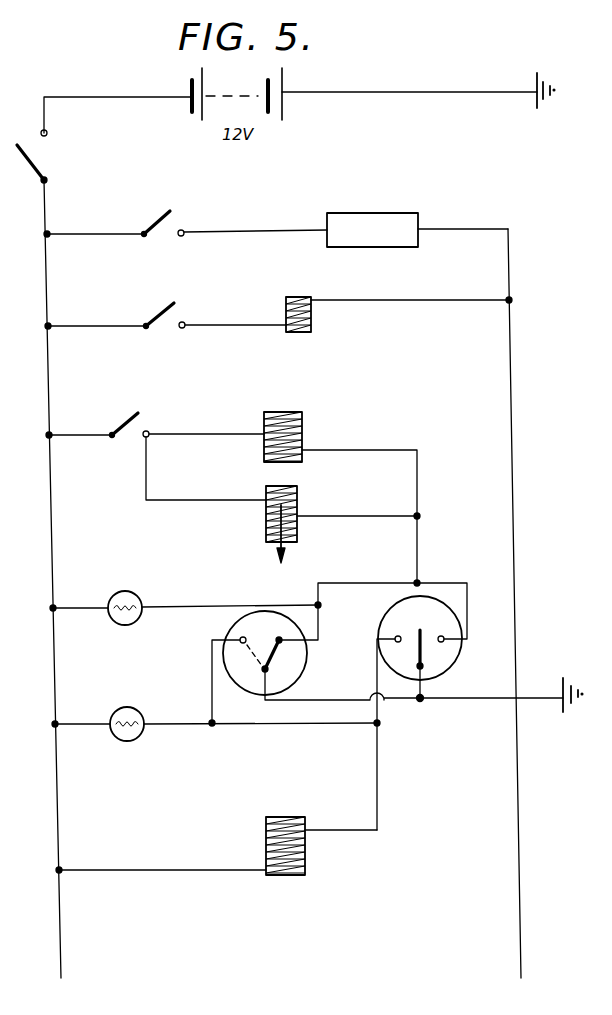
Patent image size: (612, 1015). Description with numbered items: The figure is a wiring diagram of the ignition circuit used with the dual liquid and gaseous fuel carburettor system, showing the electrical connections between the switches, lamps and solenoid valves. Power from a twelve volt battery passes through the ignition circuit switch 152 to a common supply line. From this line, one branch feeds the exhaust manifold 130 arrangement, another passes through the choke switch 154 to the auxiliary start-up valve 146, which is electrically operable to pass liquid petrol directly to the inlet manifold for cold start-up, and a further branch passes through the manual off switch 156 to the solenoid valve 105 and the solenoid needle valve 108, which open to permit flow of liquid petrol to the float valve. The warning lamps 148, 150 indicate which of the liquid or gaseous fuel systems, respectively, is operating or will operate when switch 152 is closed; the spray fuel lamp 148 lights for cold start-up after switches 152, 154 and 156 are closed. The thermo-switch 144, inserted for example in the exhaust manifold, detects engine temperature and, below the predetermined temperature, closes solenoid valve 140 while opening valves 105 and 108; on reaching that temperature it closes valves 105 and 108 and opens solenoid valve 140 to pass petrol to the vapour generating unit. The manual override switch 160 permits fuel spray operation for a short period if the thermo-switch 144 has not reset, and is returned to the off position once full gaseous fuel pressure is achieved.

The solenoid valve 105 is at (302, 434).
The solenoid needle valve 108 is at (297, 511).
The exhaust manifold 130 is at (392, 242).
The solenoid valve 140 is at (305, 855).
The thermo-switch 144 is at (300, 659).
The auxiliary start-up valve 146 is at (313, 299).
The warning lamp 148 is at (143, 598).
The warning lamp 150 is at (130, 707).
The ignition circuit switch 152 is at (47, 156).
The choke switch 154 is at (180, 311).
The manual off switch 156 is at (140, 426).
The manual override switch 160 is at (453, 668).